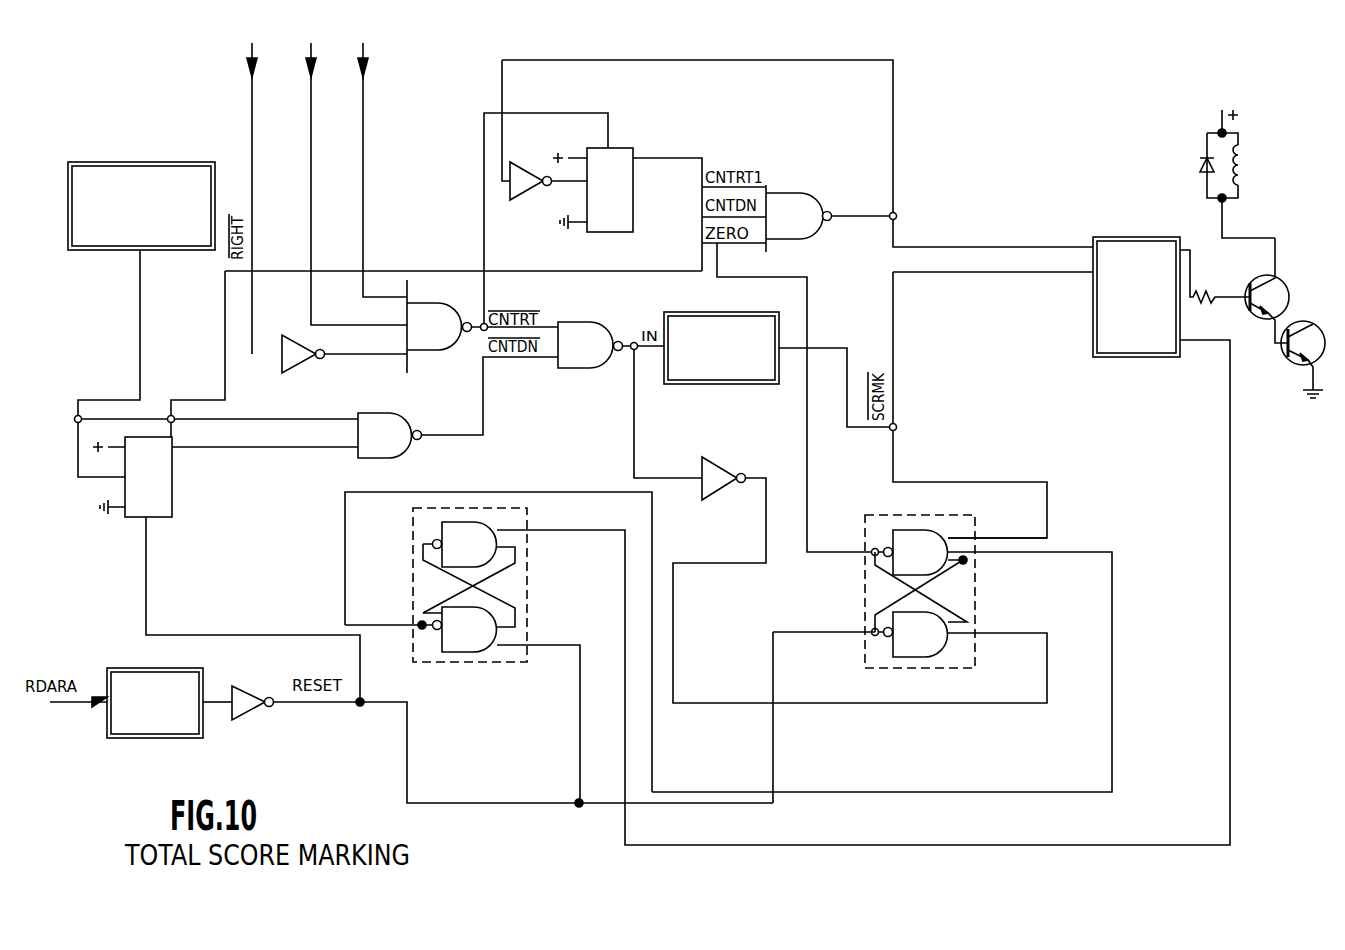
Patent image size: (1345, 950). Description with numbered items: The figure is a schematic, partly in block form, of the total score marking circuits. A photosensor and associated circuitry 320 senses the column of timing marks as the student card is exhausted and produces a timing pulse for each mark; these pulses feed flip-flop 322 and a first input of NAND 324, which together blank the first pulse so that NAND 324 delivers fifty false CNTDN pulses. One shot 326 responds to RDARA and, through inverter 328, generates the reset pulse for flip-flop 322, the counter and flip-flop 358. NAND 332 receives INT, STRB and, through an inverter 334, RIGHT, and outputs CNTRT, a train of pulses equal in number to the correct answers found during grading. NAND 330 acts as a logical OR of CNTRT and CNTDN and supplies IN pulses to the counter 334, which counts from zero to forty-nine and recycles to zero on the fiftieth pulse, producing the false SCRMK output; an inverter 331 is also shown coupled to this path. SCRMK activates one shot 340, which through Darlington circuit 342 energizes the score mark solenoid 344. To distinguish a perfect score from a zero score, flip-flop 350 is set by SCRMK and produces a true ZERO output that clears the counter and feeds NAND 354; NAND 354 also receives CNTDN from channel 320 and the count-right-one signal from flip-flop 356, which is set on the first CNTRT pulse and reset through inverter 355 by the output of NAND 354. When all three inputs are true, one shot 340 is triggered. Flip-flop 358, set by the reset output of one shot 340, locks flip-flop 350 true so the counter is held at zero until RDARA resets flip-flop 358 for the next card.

The photosensor and associated circuitry 320 is at (147, 163).
The flip-flop 322 is at (173, 500).
The NAND 324 is at (411, 420).
The one shot 326 is at (127, 670).
The inverter 328 is at (238, 686).
The NAND gate 330 is at (566, 323).
The inverter 331 is at (716, 460).
The NAND 332 is at (419, 303).
The counter 334 is at (283, 340).
The one shot 340 is at (1106, 237).
The Darlington circuit 342 is at (1246, 282).
The score mark solenoid 344 is at (1244, 148).
The flip-flop 350 is at (979, 533).
The NAND 354 is at (826, 212).
The inverter 355 is at (532, 162).
The flip-flop 356 is at (634, 210).
The flip-flop 358 is at (530, 530).